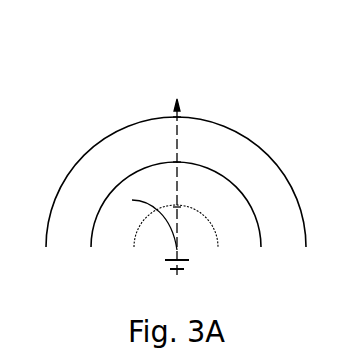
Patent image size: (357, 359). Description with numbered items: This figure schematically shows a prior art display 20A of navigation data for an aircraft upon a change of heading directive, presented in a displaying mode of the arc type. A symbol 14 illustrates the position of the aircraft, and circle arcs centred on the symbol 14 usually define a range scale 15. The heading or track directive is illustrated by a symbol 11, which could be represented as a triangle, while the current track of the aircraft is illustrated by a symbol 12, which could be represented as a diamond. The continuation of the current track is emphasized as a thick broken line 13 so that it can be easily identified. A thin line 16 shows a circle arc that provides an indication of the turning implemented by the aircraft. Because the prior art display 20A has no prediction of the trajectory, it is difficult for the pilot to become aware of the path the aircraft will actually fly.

The prior art display 20A is at (207, 90).
The symbol 11 is at (85, 128).
The symbol 12 is at (183, 107).
The thick broken line 13 is at (177, 170).
The symbol 14 is at (190, 261).
The range scale 15 is at (119, 256).
The thin line 16 is at (180, 207).